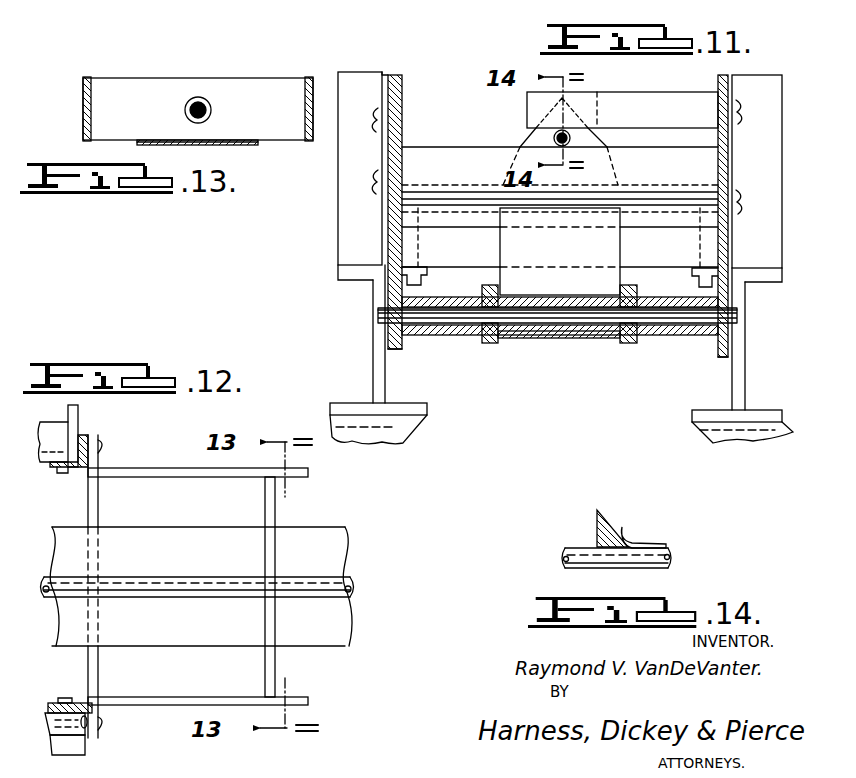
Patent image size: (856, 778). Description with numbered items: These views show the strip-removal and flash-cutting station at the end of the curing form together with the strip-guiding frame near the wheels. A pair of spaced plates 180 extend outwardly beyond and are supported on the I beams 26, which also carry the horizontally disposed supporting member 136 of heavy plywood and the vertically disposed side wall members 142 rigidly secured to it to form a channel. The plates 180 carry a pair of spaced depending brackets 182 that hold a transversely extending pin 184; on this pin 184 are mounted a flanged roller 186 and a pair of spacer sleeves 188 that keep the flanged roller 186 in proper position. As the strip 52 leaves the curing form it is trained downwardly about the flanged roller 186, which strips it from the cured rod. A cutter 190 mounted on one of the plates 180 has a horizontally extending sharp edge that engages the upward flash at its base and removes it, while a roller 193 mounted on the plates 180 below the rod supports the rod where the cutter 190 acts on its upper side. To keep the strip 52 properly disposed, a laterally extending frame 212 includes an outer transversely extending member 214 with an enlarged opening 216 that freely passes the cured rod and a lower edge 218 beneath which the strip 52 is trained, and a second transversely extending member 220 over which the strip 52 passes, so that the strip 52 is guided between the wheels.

In FIG. 11, the I beams 26 is at (373, 377).
In FIG. 11, the strip 52 is at (612, 221).
In FIG. 13, the strip 52 is at (163, 143).
In FIG. 12, the strip 52 is at (320, 539).
In FIG. 11, the supporting member 136 is at (467, 253).
In FIG. 11, the side wall members 142 is at (338, 240).
In FIG. 11, the plates 180 is at (387, 101).
In FIG. 11, the brackets 182 is at (395, 350).
In FIG. 11, the pin 184 is at (430, 322).
In FIG. 11, the flanged roller 186 is at (503, 340).
In FIG. 11, the spacer sleeves 188 is at (473, 333).
In FIG. 11, the cutter 190 is at (642, 103).
In FIG. 14, the cutter 190 is at (613, 523).
In FIG. 11, the roller 193 is at (477, 147).
In FIG. 13, the frame 212 is at (308, 78).
In FIG. 12, the frame 212 is at (145, 464).
In FIG. 12, the outer transversely extending member 214 is at (275, 510).
In FIG. 13, the enlarged opening 216 is at (202, 95).
In FIG. 13, the lower edge 218 is at (260, 145).
In FIG. 12, the second transversely extending member 220 is at (98, 517).